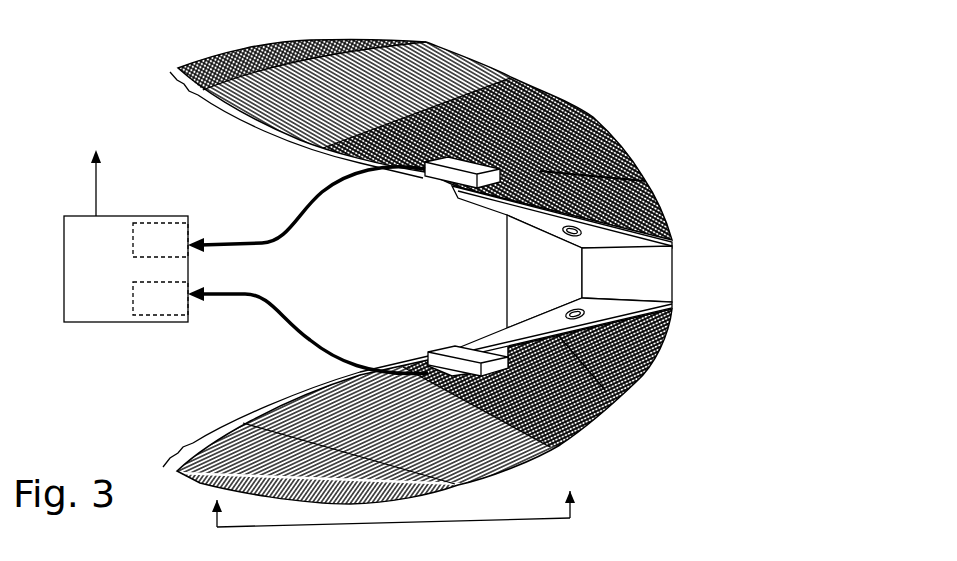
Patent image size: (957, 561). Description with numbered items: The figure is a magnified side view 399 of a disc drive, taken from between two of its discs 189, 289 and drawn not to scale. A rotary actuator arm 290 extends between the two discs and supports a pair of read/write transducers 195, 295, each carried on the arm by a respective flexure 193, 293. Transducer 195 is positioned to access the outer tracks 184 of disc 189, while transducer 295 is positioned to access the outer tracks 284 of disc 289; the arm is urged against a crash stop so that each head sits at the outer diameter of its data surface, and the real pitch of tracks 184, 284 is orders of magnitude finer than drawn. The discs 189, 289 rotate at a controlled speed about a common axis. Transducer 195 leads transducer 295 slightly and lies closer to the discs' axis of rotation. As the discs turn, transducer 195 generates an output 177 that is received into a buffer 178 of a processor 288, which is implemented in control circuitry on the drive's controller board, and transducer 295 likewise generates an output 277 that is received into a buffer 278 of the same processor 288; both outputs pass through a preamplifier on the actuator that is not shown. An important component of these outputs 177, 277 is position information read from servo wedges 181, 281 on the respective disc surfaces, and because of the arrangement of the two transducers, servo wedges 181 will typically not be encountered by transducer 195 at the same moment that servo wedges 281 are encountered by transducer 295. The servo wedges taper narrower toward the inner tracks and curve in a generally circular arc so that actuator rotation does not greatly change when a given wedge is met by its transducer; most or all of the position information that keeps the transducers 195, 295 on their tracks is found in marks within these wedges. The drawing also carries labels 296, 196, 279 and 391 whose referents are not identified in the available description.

The side view 399 is at (689, 68).
The servo wedges 281 is at (430, 41).
The outer tracks 284 is at (651, 178).
The disc 289 is at (263, 131).
The upper panel corner 296 is at (217, 127).
The read/write transducer 295 is at (428, 178).
The flexure 293 is at (498, 204).
The central web 279 is at (522, 291).
The rotary actuator arm 290 is at (605, 280).
The servo wedges 181 is at (475, 487).
The outer tracks 184 is at (661, 355).
The disc 189 is at (261, 408).
The lower panel corner 196 is at (227, 402).
The read/write transducer 195 is at (436, 361).
The flexure 193 is at (498, 342).
The output 277 is at (306, 209).
The output 177 is at (308, 330).
The processor 288 is at (70, 277).
The buffer 278 is at (142, 251).
The buffer 178 is at (142, 309).
The panel span dimension 391 is at (394, 515).